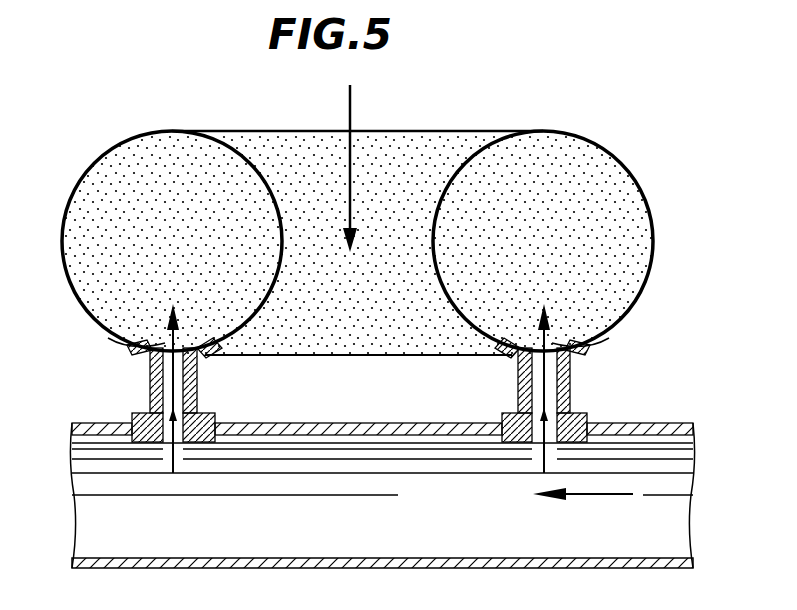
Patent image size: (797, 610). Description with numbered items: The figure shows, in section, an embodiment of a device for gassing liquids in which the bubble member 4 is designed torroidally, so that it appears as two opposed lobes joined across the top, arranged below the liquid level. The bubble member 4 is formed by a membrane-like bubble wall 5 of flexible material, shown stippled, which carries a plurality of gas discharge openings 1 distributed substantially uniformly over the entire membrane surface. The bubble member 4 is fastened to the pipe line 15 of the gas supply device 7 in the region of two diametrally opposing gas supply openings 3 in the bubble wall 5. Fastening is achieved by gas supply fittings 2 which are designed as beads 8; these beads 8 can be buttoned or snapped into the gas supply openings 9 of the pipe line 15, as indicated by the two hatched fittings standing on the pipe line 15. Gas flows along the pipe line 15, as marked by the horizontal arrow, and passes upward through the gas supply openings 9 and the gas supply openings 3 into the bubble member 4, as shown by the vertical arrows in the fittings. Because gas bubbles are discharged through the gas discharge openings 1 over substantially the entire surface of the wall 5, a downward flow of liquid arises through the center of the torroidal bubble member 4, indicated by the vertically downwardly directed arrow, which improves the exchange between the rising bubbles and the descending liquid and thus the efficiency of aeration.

The gas discharge openings 1 is at (625, 192).
The gas supply fitting 2 is at (199, 384).
The gas supply opening 3 is at (125, 346).
The bubble member 4 is at (77, 181).
The bubble wall 5 is at (246, 158).
The gas supply device 7 is at (387, 418).
The bead 8 is at (572, 375).
The gas supply opening 9 is at (150, 398).
The pipe line 15 is at (631, 421).